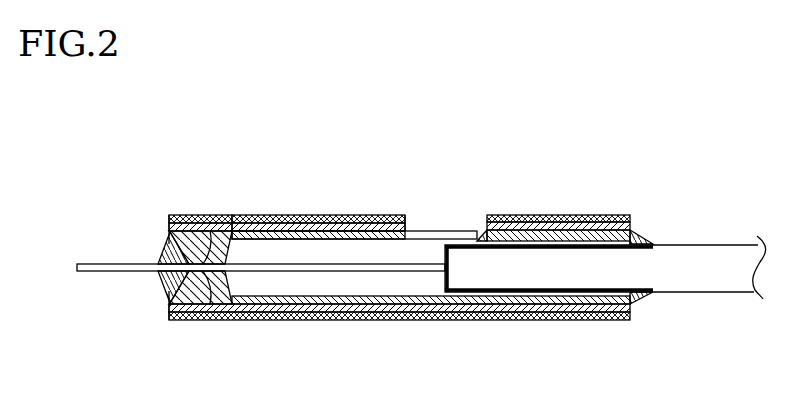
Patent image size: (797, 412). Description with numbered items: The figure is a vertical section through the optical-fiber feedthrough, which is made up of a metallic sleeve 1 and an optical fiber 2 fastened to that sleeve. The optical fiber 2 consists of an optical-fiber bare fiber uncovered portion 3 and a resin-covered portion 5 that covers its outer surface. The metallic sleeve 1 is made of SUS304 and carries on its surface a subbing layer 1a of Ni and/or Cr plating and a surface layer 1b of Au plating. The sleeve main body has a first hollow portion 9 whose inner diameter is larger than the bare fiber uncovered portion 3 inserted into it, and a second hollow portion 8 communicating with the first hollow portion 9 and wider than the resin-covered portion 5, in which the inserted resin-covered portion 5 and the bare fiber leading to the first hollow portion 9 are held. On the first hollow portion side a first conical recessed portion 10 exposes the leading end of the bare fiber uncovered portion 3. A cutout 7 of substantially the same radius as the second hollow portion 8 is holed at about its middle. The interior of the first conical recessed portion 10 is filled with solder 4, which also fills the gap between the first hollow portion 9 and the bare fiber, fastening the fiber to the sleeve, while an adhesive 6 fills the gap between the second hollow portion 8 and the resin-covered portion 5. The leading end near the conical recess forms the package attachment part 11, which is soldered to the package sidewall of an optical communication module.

The metallic sleeve 1 is at (257, 215).
The subbing layer 1a is at (325, 322).
The surface layer 1b is at (317, 215).
The optical fiber 2 is at (683, 245).
The optical-fiber bare fiber uncovered portion 3 is at (92, 263).
The solder 4 is at (166, 250).
The resin-covered portion 5 is at (737, 245).
The adhesive 6 is at (547, 232).
The cutout 7 is at (435, 236).
The second hollow portion 8 is at (424, 288).
The first hollow portion 9 is at (222, 322).
The first conical recessed portion 10 is at (177, 322).
The package attachment part 11 is at (193, 215).